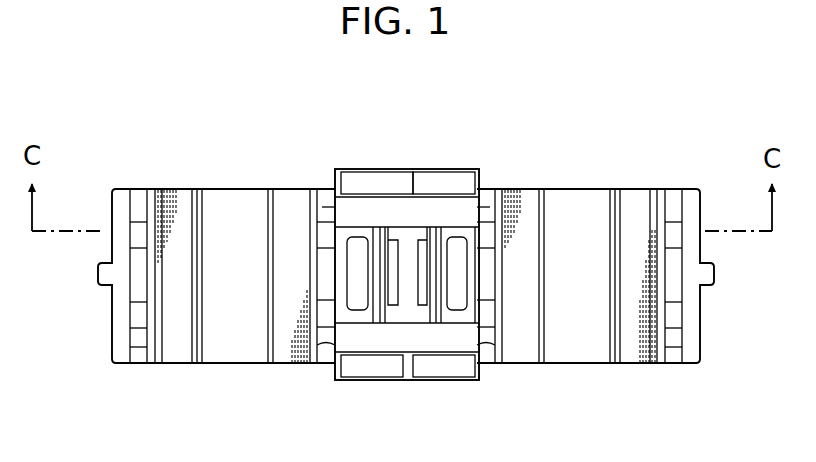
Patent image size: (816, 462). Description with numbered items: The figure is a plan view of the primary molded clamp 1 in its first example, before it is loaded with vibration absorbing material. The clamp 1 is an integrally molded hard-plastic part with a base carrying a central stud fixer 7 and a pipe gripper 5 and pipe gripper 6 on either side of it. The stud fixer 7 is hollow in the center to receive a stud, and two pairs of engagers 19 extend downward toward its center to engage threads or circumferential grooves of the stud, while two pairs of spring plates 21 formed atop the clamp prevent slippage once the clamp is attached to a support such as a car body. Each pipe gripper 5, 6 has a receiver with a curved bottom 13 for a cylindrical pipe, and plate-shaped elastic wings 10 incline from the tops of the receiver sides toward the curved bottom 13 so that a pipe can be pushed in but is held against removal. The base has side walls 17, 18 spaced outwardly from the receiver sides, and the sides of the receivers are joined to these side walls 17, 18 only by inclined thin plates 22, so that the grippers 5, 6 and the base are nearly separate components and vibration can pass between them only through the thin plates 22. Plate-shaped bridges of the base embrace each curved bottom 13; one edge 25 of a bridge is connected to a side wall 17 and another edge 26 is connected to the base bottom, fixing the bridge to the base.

The primary molded clamp 1 is at (747, 146).
The pipe gripper 5 is at (226, 158).
The pipe gripper 6 is at (584, 176).
The stud fixer 7 is at (431, 160).
The elastic wings 10 is at (175, 352).
The curved bottom 13 is at (218, 296).
The side wall 17 is at (117, 347).
The side wall 18 is at (342, 247).
The engagers 19 is at (426, 242).
The spring plates 21 is at (362, 180).
The thin plates 22 is at (143, 262).
The edge 25 is at (140, 342).
The edge 26 is at (332, 210).